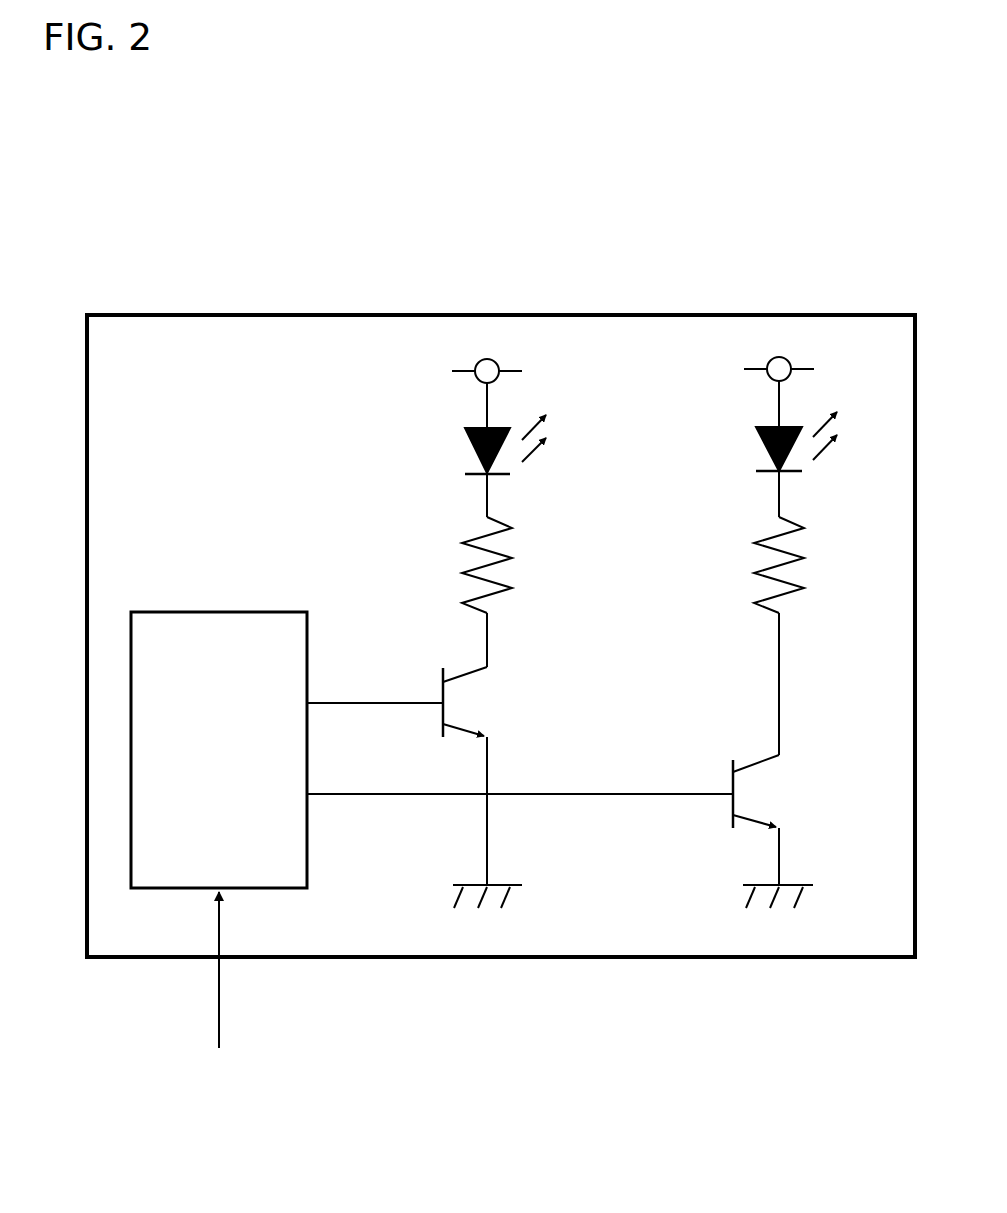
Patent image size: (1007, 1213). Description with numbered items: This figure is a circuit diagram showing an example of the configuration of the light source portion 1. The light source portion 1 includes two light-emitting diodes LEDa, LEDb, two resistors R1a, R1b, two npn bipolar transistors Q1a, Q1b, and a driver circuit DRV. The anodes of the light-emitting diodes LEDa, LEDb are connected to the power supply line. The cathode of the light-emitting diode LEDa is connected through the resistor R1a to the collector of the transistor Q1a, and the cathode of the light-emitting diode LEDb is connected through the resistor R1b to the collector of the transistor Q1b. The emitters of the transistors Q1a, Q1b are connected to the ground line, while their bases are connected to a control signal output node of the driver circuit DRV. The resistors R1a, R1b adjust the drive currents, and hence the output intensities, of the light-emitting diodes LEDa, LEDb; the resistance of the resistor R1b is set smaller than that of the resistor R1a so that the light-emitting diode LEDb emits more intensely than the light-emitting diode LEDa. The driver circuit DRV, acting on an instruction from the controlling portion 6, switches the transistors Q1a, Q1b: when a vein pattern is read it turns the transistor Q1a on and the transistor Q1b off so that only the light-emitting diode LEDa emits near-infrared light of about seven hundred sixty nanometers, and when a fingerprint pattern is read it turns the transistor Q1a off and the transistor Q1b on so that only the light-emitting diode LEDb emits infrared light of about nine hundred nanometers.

The light source portion 1 is at (500, 312).
The driver circuit DRV is at (220, 610).
The controlling portion 6 is at (220, 1025).
The light-emitting diode LEDa is at (470, 454).
The light-emitting diode LEDb is at (762, 454).
The resistor R1a is at (466, 569).
The resistor R1b is at (758, 569).
The npn bipolar transistor Q1a is at (442, 727).
The npn bipolar transistor Q1b is at (731, 817).